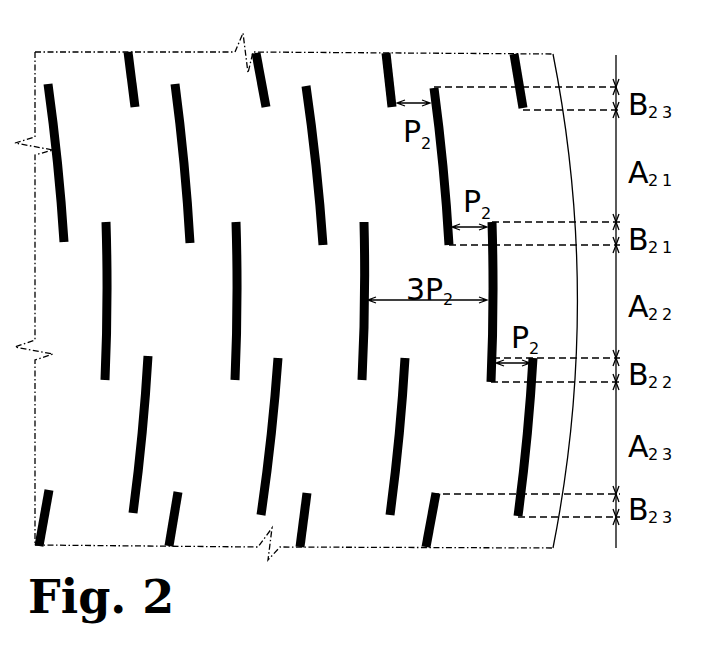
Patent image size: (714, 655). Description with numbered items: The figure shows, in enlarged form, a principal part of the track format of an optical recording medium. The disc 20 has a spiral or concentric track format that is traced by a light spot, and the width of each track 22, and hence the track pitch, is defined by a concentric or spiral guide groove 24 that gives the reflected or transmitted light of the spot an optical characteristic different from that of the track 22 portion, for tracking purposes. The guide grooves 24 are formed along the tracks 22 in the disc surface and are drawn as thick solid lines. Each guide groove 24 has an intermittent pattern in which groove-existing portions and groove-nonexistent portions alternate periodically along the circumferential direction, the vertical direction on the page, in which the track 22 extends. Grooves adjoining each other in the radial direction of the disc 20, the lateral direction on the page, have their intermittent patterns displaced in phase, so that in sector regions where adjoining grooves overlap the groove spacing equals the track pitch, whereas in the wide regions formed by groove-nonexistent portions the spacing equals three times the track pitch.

The disc 20 is at (560, 87).
The track 22 is at (342, 163).
The guide groove 24 is at (500, 222).